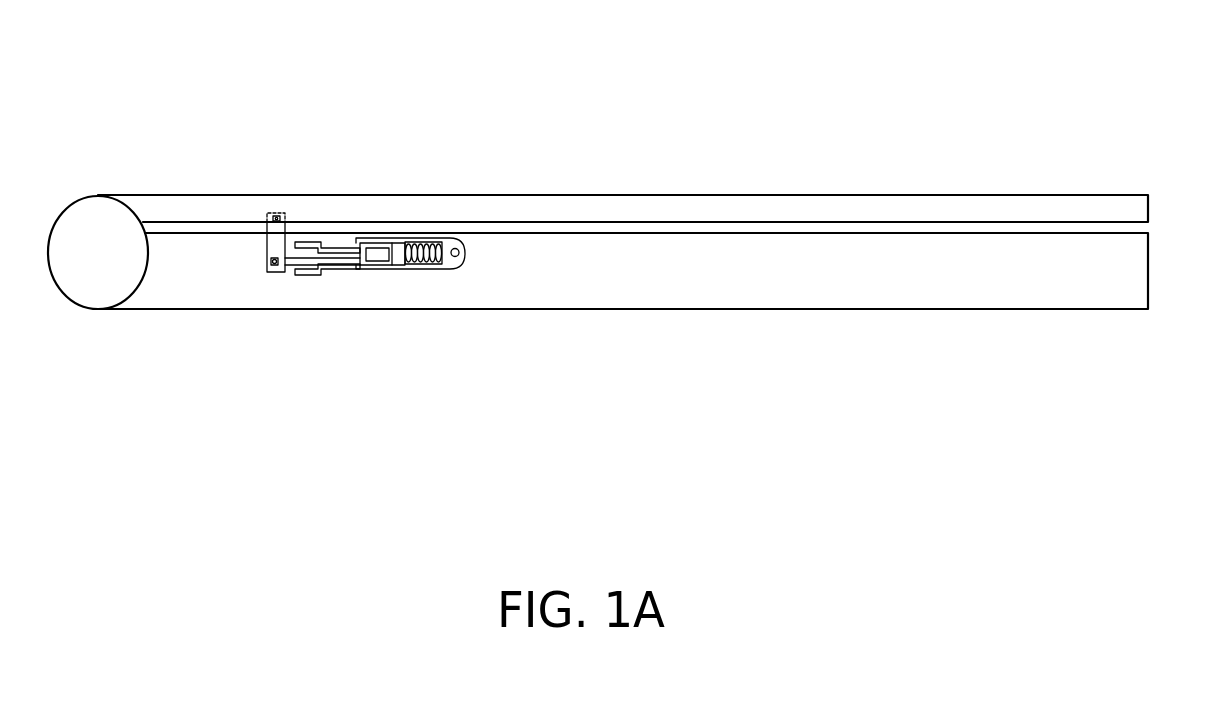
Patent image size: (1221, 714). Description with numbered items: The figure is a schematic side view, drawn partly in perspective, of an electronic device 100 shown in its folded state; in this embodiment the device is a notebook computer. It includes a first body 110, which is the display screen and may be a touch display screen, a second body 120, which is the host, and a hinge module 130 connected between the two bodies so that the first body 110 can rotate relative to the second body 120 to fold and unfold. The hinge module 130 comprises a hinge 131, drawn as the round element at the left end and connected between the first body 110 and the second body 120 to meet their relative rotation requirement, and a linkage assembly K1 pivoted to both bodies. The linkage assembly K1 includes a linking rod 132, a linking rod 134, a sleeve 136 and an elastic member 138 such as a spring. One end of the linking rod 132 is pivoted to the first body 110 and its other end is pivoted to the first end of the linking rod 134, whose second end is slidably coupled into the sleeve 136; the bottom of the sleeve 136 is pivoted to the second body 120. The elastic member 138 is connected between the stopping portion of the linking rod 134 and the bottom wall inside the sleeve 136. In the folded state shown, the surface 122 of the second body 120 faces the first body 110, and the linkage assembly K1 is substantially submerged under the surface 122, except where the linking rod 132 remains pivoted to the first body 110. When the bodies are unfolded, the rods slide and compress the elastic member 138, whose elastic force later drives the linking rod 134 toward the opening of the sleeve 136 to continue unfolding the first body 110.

The electronic device 100 is at (1198, 365).
The first body 110 is at (843, 207).
The second body 120 is at (860, 283).
The surface 122 is at (523, 232).
The hinge module 130 is at (308, 70).
The hinge 131 is at (105, 213).
The linkage assembly K1 is at (390, 125).
The linking rod 132 is at (267, 247).
The linking rod 134 is at (307, 260).
The sleeve 136 is at (380, 240).
The elastic member 138 is at (427, 243).